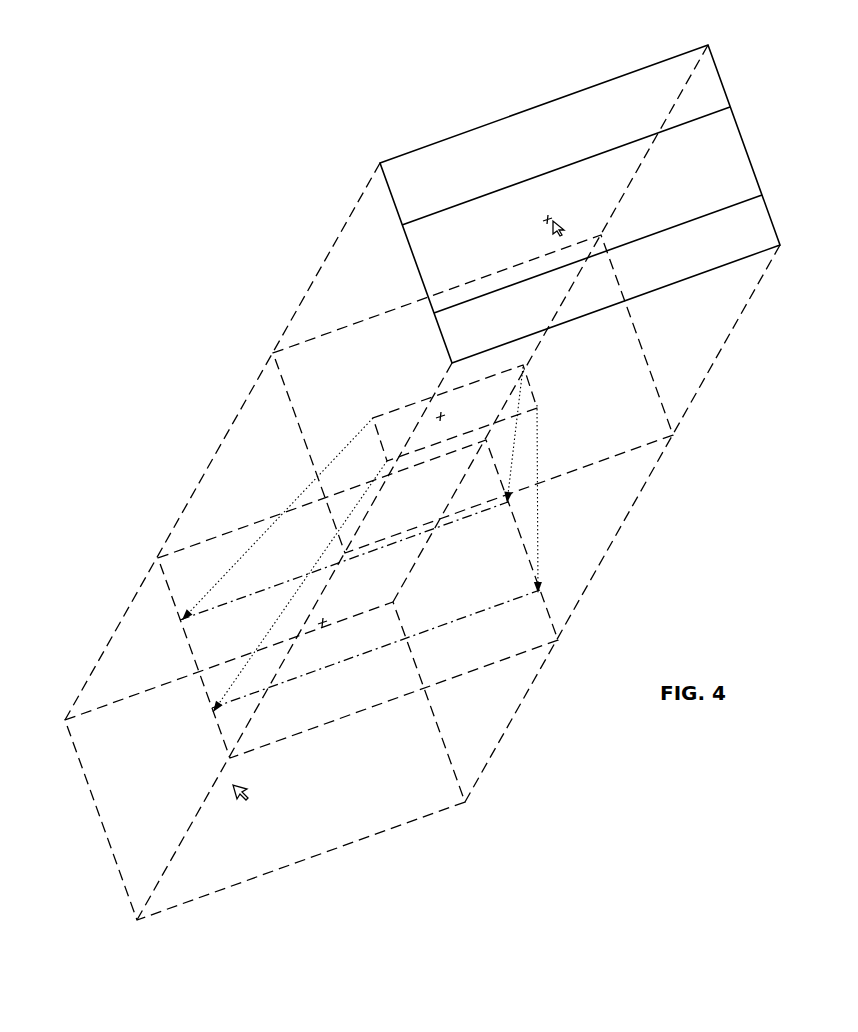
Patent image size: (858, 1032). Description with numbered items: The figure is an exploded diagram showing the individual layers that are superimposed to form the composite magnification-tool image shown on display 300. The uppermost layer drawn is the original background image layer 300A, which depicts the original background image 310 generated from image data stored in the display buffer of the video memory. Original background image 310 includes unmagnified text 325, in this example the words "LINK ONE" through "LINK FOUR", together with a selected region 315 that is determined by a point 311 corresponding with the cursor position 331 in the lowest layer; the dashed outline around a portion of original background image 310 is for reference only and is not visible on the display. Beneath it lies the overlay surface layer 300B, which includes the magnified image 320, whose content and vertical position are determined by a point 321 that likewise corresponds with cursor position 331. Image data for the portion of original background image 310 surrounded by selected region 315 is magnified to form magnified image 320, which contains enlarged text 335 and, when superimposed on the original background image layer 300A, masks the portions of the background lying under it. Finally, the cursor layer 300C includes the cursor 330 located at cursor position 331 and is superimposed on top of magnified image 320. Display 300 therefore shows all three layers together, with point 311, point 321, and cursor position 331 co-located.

The display 300 is at (720, 80).
The original background image layer 300A is at (630, 316).
The overlay surface layer 300B is at (508, 512).
The cursor layer 300C is at (447, 745).
The original background image 310 is at (733, 159).
The magnified image 320 is at (755, 221).
The text 325 is at (551, 144).
The enlarged text 335 is at (420, 226).
The cursor 330 is at (558, 226).
The point 311 is at (440, 417).
The point 321 is at (322, 625).
The cursor position 331 is at (236, 787).
The selected region 315 is at (532, 383).